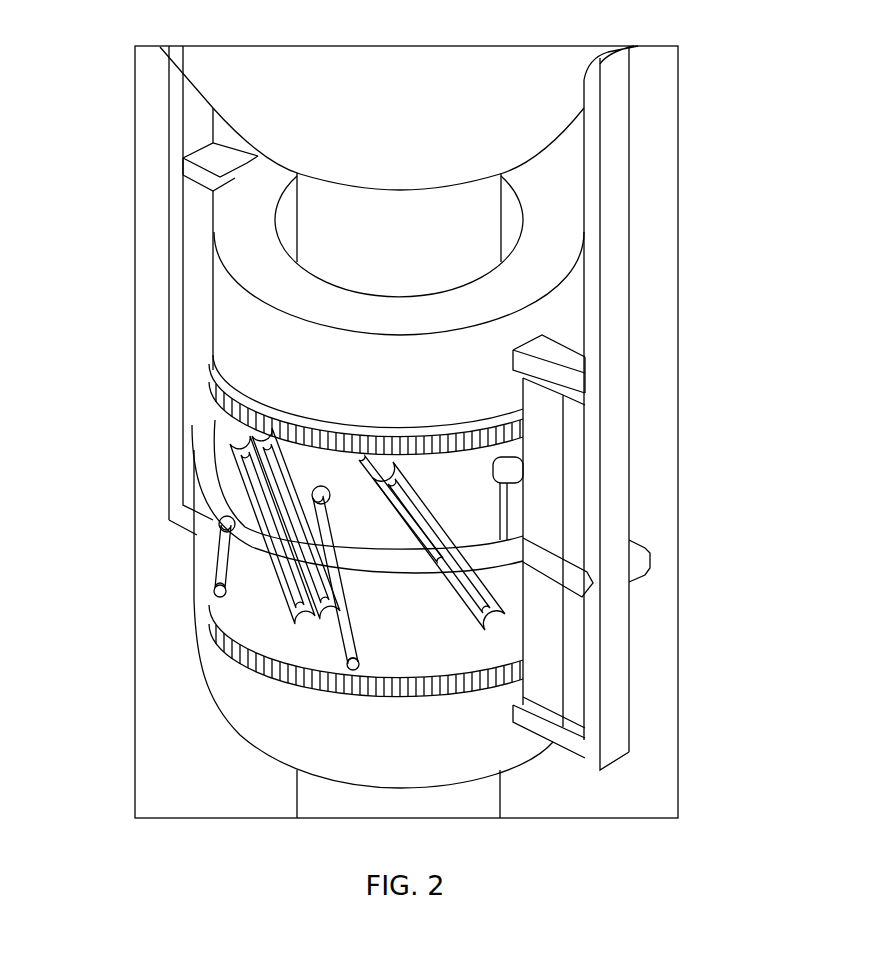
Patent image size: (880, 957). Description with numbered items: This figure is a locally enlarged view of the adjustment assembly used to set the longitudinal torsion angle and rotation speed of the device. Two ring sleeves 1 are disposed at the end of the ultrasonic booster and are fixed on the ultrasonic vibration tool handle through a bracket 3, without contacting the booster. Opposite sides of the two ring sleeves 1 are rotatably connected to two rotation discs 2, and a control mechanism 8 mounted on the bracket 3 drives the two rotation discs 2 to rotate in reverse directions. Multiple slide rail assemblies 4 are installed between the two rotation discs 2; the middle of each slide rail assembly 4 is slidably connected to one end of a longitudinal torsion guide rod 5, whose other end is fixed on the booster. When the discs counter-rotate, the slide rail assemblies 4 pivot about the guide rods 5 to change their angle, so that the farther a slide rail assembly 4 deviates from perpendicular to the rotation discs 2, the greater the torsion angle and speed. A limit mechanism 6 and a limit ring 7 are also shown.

The ring sleeve 1 is at (232, 322).
The rotation disc 2 is at (235, 390).
The bracket 3 is at (615, 315).
The slide rail assembly 4 is at (420, 432).
The longitudinal torsion guide rod 5 is at (245, 445).
The limit mechanism 6 is at (213, 432).
The limit ring 7 is at (205, 522).
The control mechanism 8 is at (550, 635).